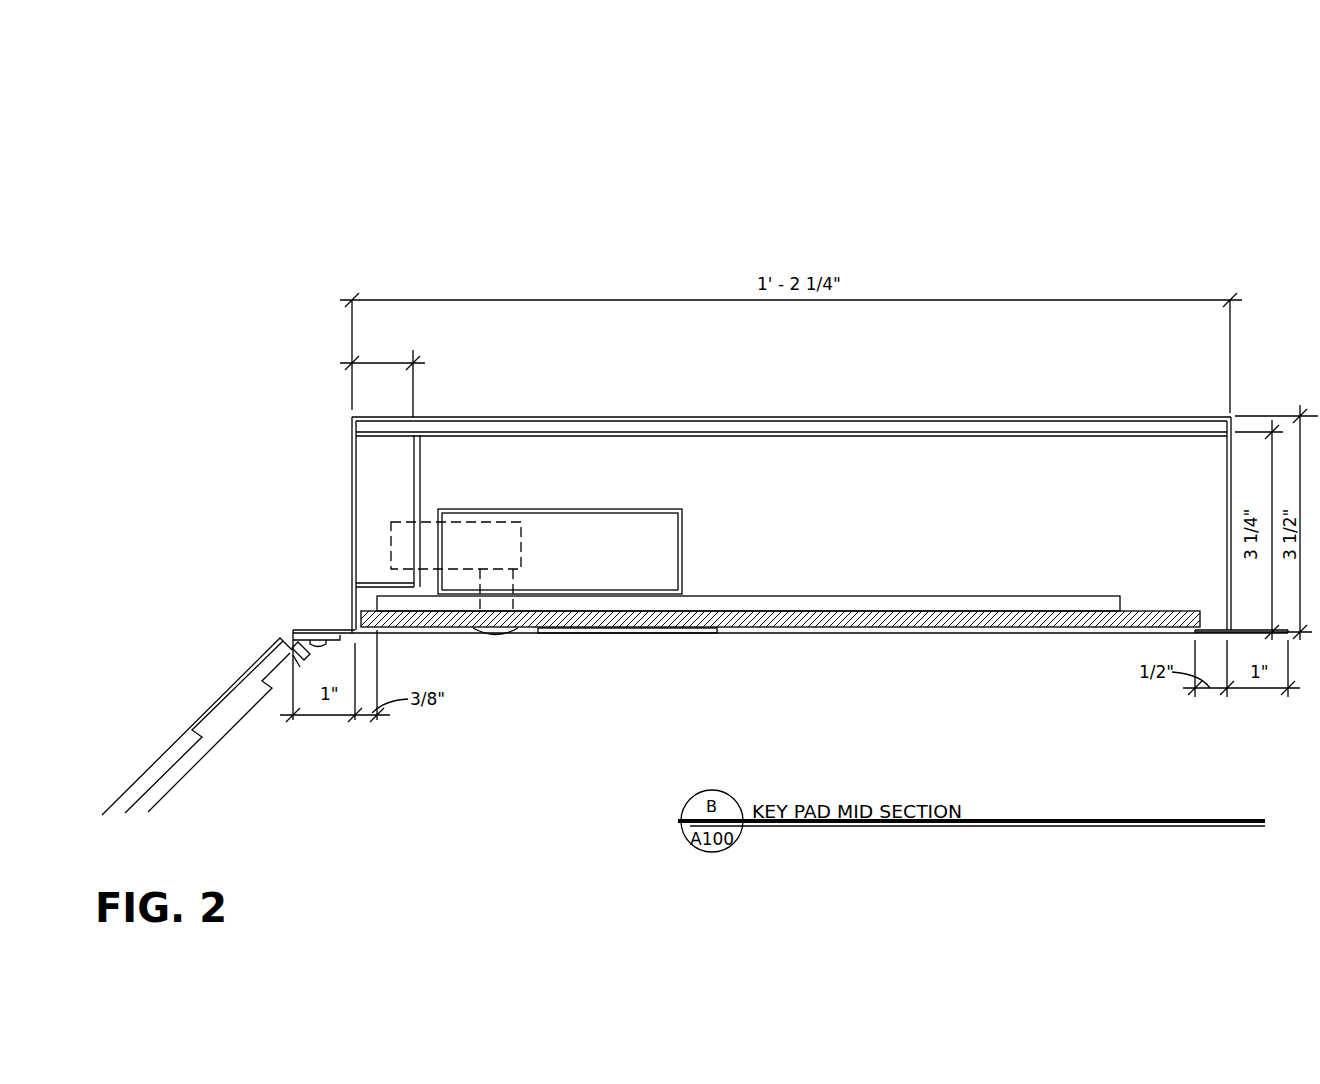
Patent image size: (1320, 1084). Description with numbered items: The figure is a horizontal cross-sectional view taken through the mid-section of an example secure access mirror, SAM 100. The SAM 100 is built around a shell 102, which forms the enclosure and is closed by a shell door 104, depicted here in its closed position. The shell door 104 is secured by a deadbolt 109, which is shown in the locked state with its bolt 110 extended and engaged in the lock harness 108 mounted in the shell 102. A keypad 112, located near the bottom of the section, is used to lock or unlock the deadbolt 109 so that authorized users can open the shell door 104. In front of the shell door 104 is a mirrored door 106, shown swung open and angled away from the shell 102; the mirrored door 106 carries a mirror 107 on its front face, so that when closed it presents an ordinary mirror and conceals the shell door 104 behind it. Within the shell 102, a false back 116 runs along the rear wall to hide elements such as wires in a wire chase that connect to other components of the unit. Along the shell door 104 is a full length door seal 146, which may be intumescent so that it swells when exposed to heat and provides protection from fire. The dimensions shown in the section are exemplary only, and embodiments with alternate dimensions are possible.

The secure access mirror 100 is at (863, 137).
The shell 102 is at (563, 414).
The shell door 104 is at (1042, 633).
The mirrored door 106 is at (175, 786).
The mirror 107 is at (208, 713).
The lock harness 108 is at (422, 460).
The deadbolt 109 is at (683, 556).
The bolt 110 is at (427, 573).
The keypad 112 is at (610, 632).
The false back 116 is at (852, 425).
The door seal 146 is at (362, 597).